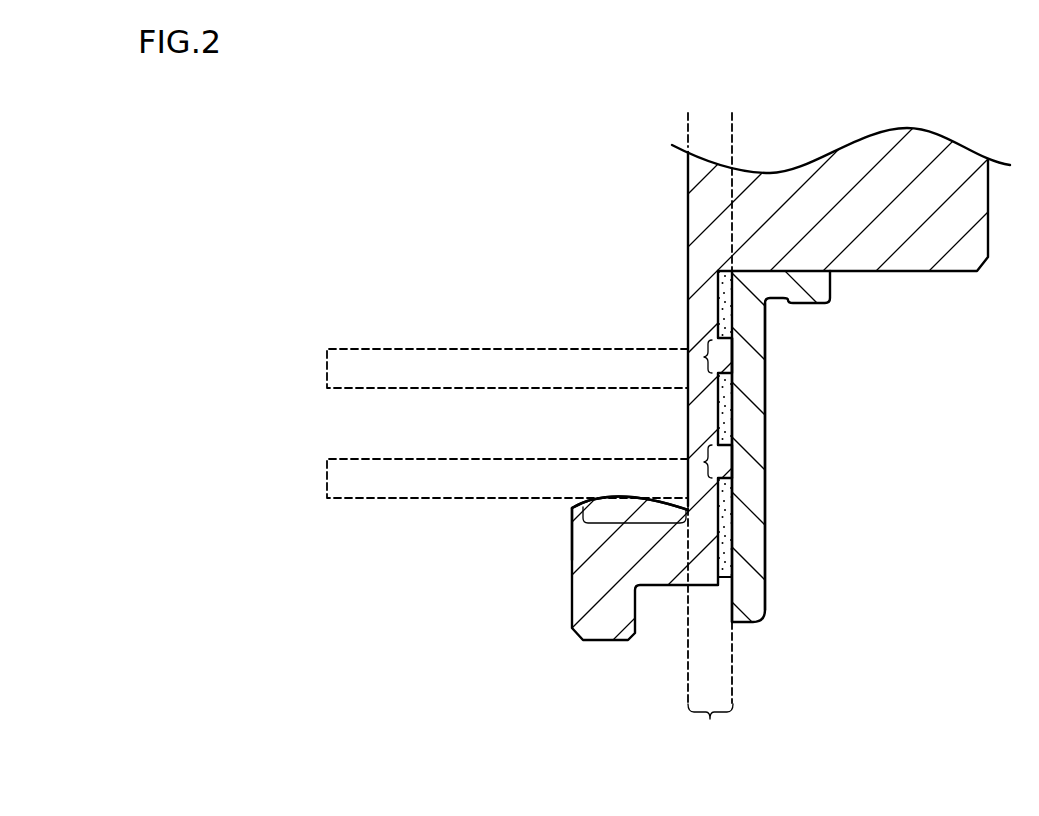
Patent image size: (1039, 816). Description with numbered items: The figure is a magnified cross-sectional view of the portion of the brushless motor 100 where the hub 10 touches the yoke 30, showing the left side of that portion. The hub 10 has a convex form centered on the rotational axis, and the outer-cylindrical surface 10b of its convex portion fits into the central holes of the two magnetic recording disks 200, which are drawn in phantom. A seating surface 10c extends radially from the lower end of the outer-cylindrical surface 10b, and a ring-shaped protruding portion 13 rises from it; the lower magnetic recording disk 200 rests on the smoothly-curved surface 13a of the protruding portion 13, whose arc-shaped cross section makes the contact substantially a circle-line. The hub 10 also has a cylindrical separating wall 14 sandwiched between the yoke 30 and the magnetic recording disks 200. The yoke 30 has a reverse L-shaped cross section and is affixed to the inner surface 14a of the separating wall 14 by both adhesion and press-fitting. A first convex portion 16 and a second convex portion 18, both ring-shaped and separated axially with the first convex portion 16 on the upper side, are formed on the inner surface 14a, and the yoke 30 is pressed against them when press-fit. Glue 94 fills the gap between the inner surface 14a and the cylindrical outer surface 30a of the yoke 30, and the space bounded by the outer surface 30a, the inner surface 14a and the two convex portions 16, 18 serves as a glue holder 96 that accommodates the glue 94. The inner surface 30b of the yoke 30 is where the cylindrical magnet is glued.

The hub 10 is at (583, 549).
The outer-cylindrical surface 10b is at (688, 205).
The seating surface 10c is at (583, 506).
The protruding portion 13 is at (637, 525).
The curved surface 13a is at (615, 495).
The separating wall 14 is at (710, 431).
The inner surface 14a is at (730, 423).
The first convex portion 16 is at (688, 355).
The second convex portion 18 is at (688, 457).
The yoke 30 is at (817, 295).
The outer surface 30a is at (735, 528).
The inner surface 30b is at (768, 557).
The glue 94 is at (732, 378).
The glue holder 96 is at (732, 397).
The brushless motor 100 is at (677, 781).
The magnetic recording disks 200 is at (408, 383).